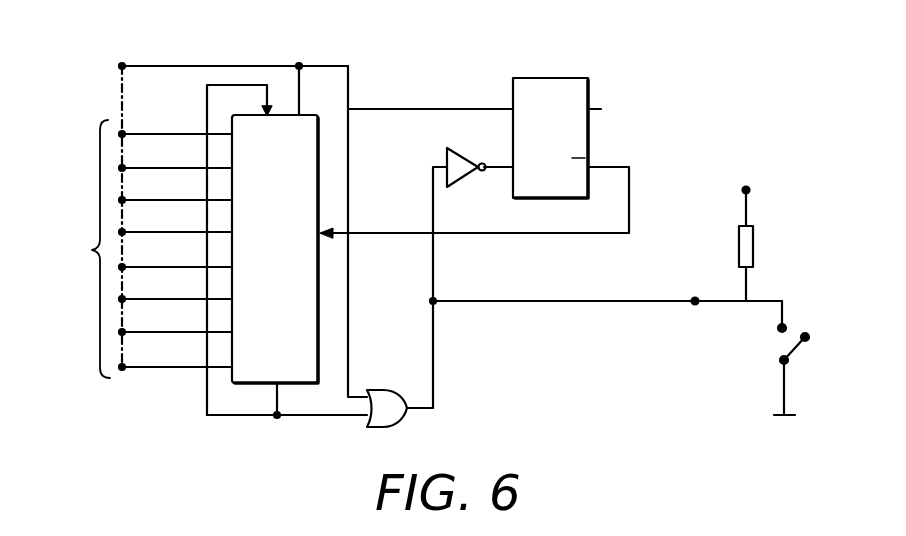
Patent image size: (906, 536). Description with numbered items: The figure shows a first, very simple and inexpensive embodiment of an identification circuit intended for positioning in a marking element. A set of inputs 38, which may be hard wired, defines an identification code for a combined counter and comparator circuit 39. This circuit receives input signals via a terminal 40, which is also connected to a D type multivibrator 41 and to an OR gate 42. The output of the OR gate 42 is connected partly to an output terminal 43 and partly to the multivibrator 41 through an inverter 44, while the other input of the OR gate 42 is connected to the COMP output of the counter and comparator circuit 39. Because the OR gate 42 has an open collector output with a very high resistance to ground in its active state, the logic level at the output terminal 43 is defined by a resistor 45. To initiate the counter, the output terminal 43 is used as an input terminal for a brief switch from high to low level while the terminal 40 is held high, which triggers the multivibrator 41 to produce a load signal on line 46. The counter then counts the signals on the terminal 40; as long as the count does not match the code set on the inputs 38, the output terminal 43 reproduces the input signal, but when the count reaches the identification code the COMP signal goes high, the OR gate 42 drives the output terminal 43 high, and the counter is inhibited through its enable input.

The inputs 38 is at (139, 249).
The combined counter and comparator circuit 39 is at (297, 203).
The terminal 40 is at (122, 66).
The D type multivibrator 41 is at (550, 88).
The OR gate 42 is at (385, 390).
The output terminal 43 is at (697, 304).
The inverter 44 is at (458, 186).
The resistor 45 is at (753, 238).
The line 46 is at (629, 216).